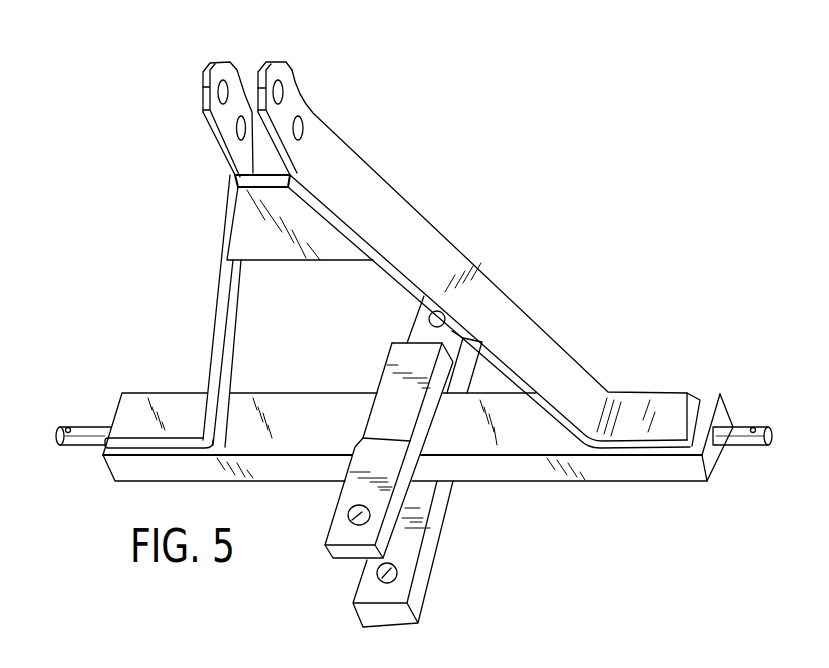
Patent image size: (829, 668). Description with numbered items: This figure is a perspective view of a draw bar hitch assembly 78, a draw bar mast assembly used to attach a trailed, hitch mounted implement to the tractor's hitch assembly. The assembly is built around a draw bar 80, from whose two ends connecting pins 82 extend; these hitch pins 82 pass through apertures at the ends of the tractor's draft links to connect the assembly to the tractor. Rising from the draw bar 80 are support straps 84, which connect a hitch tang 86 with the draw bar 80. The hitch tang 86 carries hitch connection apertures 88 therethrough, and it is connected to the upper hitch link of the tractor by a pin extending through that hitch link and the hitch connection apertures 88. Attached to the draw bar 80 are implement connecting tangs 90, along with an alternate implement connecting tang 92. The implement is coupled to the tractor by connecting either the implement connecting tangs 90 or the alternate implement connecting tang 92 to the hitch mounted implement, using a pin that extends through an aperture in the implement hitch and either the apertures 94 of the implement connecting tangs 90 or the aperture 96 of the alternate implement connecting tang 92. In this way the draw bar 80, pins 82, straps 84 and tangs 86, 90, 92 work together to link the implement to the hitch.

The draw bar hitch assembly 78 is at (446, 201).
The draw bar 80 is at (521, 447).
The connecting pins 82 is at (70, 447).
The support straps 84 is at (221, 314).
The hitch tang 86 is at (290, 70).
The hitch connection apertures 88 is at (252, 112).
The implement connecting tangs 90 is at (403, 493).
The alternate implement connecting tang 92 is at (417, 313).
The apertures 94 is at (377, 571).
The aperture 96 is at (445, 318).